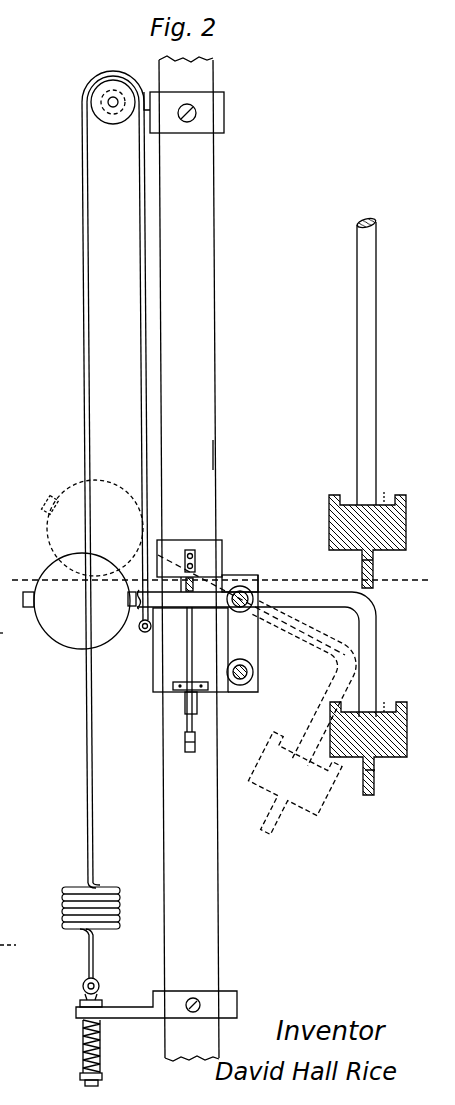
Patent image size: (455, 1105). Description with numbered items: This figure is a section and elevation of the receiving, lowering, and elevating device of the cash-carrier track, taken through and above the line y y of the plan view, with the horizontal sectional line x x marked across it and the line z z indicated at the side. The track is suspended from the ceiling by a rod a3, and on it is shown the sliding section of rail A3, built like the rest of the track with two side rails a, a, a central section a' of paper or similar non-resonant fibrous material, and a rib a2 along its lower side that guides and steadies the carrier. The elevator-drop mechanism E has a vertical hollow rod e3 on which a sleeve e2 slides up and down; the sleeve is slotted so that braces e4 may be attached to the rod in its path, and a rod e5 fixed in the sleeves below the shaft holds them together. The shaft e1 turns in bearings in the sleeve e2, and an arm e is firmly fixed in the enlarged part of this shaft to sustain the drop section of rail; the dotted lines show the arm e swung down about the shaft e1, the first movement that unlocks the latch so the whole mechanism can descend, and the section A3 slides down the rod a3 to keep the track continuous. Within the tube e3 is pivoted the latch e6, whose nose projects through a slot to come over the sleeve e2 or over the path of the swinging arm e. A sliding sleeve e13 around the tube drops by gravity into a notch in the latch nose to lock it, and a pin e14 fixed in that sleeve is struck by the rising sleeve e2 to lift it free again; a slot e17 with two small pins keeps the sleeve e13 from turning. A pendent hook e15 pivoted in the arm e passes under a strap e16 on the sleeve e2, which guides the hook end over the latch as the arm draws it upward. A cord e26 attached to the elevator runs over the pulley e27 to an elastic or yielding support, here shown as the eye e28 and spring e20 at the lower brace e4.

The pulley e27 is at (113, 89).
The cord e26 is at (106, 524).
The vertical hollow rod e3 is at (184, 558).
The elevator-drop mechanism E is at (224, 455).
The rod a3 is at (366, 361).
The section of rail A3 is at (355, 541).
The side rail a is at (361, 637).
The central section a' is at (385, 596).
The rib a2 is at (362, 572).
The horizontal sectional line x is at (220, 580).
The line y is at (6, 622).
The line z is at (12, 946).
The sliding sleeve e13 is at (189, 558).
The slot e17 is at (195, 561).
The latch e6 is at (228, 575).
The shaft e1 is at (243, 586).
The pin e14 is at (197, 599).
The sleeve e2 is at (205, 633).
The strap e16 is at (199, 682).
The rod e5 is at (248, 682).
The pendent hook e15 is at (184, 745).
The arm e is at (279, 720).
The eye e28 is at (99, 980).
The brace e4 is at (156, 1004).
The spring e20 is at (102, 1077).